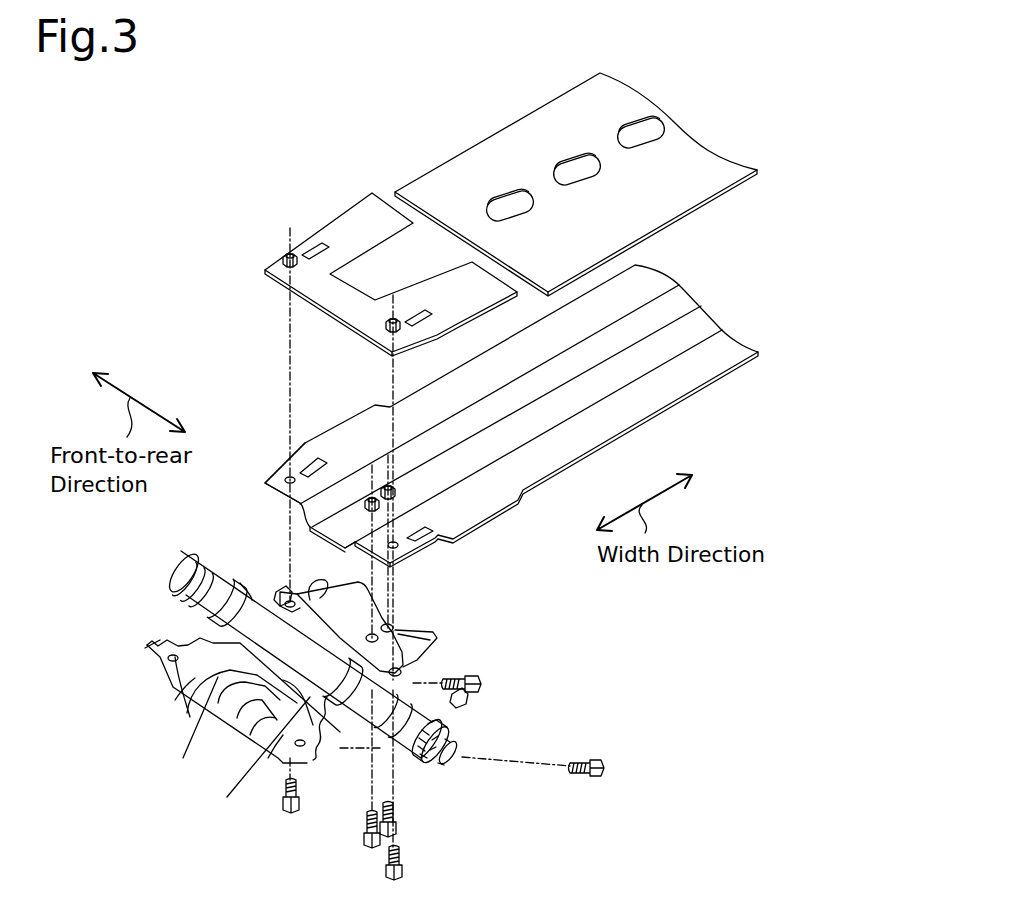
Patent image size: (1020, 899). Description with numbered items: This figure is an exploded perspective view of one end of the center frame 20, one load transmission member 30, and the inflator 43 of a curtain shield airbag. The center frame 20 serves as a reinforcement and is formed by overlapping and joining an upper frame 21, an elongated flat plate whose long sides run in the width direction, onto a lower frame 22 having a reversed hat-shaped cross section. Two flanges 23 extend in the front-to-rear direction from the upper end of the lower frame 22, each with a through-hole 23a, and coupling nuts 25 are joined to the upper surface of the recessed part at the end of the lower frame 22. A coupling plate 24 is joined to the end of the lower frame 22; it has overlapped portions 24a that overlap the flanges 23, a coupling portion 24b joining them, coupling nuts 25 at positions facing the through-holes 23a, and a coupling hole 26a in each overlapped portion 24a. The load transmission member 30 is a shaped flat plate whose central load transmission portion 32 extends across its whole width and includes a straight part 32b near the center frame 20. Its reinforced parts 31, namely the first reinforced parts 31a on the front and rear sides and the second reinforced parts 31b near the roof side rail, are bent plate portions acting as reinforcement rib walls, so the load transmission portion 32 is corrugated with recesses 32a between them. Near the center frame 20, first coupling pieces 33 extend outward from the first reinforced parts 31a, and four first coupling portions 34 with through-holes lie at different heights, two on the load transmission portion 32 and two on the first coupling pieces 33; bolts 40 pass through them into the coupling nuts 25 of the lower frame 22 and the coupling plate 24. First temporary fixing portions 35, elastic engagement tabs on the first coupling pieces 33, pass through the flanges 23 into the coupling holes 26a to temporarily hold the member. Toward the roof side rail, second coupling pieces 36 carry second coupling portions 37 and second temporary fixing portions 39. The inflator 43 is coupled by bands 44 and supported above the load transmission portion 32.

The center frame 20 is at (486, 474).
The upper frame 21 is at (580, 295).
The lower frame 22 is at (456, 636).
The flange 23 is at (420, 545).
The through-hole 23a is at (398, 548).
The coupling plate 24 is at (391, 259).
The overlapped portion 24a is at (440, 293).
The coupling portion 24b is at (342, 303).
The coupling nut 25 is at (400, 493).
The coupling hole 26a is at (417, 327).
The load transmission member 30 is at (145, 672).
The first bracket 31 is at (226, 711).
The first reinforced part 31a is at (317, 622).
The second reinforced part 31b is at (218, 727).
The load transmission portion 32 is at (280, 688).
The recess 32a is at (237, 754).
The straight part 32b is at (345, 612).
The first coupling piece 33 is at (420, 690).
The first coupling portion 34 is at (405, 693).
The first temporary fixing portion 35 is at (440, 652).
The second coupling piece 36 is at (268, 758).
The second coupling portion 37 is at (296, 778).
The second temporary fixing portion 39 is at (372, 757).
The bolt 40 is at (383, 868).
The inflator 43 is at (407, 750).
The band 44 is at (326, 742).